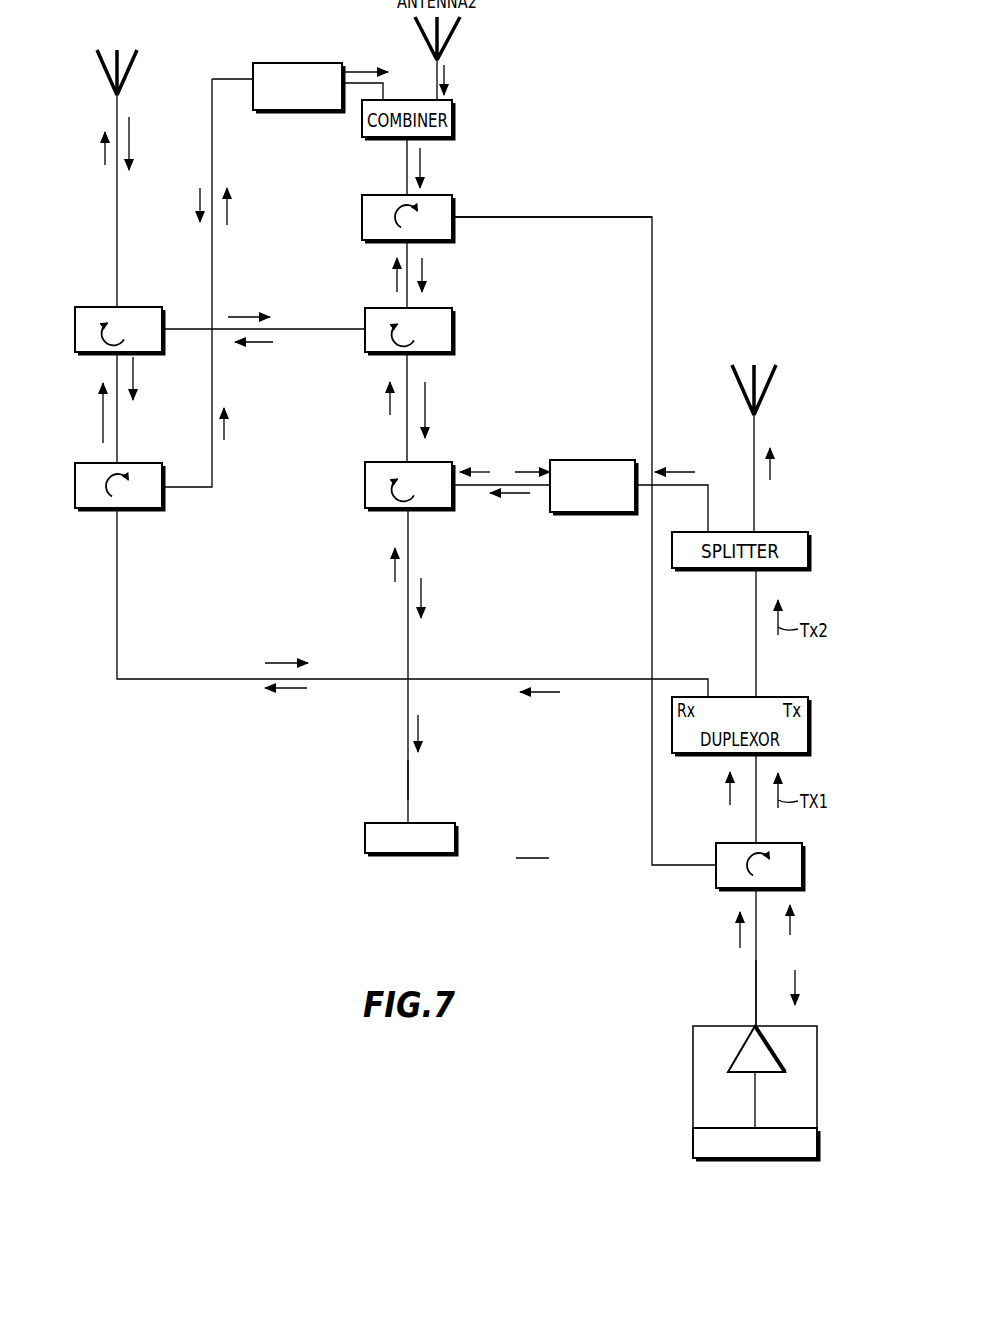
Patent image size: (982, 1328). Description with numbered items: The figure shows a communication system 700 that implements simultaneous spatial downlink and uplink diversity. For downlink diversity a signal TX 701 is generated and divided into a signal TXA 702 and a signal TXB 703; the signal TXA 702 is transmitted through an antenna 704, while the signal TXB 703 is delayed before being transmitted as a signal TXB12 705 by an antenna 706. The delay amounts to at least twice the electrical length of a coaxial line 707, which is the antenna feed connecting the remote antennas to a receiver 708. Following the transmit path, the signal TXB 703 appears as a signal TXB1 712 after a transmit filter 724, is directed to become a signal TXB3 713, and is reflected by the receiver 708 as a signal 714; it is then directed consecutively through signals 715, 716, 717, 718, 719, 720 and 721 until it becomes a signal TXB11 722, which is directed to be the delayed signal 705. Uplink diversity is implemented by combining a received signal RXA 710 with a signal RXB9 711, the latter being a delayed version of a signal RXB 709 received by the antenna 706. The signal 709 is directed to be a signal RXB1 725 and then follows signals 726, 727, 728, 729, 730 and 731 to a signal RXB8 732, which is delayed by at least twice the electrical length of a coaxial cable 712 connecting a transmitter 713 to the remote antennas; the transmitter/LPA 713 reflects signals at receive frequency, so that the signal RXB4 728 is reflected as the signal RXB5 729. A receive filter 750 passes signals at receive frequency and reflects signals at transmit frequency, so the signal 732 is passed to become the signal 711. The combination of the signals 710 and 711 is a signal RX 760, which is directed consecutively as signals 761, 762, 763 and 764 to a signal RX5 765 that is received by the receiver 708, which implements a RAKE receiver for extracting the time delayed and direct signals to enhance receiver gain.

The communication system 700 is at (532, 841).
The signal TX 701 is at (791, 932).
The signal TXA 702 is at (773, 466).
The signal TXB 703 is at (692, 470).
The antenna 704 is at (770, 378).
The signal TXB12 705 is at (101, 150).
The antenna 706 is at (103, 58).
The coaxial line 707 is at (408, 760).
The receiver 708 is at (430, 823).
The signal RXB 709 is at (133, 143).
The signal RXA 710 is at (447, 80).
The signal RXB9 711 is at (362, 70).
The coaxial cable 712 is at (474, 466).
The transmitter 713 is at (701, 1160).
The signal TXB3 reflected 714 is at (393, 576).
The signal TXB4 715 is at (388, 401).
The signal TXB5 716 is at (272, 345).
The signal TXB6 717 is at (139, 362).
The signal TXB7 718 is at (280, 662).
The signal TXB8 719 is at (288, 692).
The signal TXB9 720 is at (229, 214).
The signal TXB10 721 is at (197, 212).
The signal TXB11 722 is at (100, 406).
The transmit filter 724 is at (590, 459).
The signal RXB1 725 is at (238, 316).
The signal RXB2 726 is at (396, 288).
The signal RXB3 727 is at (558, 206).
The signal RXB4 728 is at (796, 975).
The signal RXB5 729 is at (738, 942).
The signal RXB6 730 is at (728, 804).
The signal RXB7 731 is at (556, 694).
The signal RXB8 732 is at (228, 439).
The receive filter 750 is at (260, 113).
The signal RX 760 is at (428, 175).
The signal RX1 761 is at (428, 263).
The signal RX2 762 is at (428, 389).
The signal RX3 763 is at (538, 467).
The signal RX4 764 is at (505, 500).
The signal RX5 765 is at (421, 720).